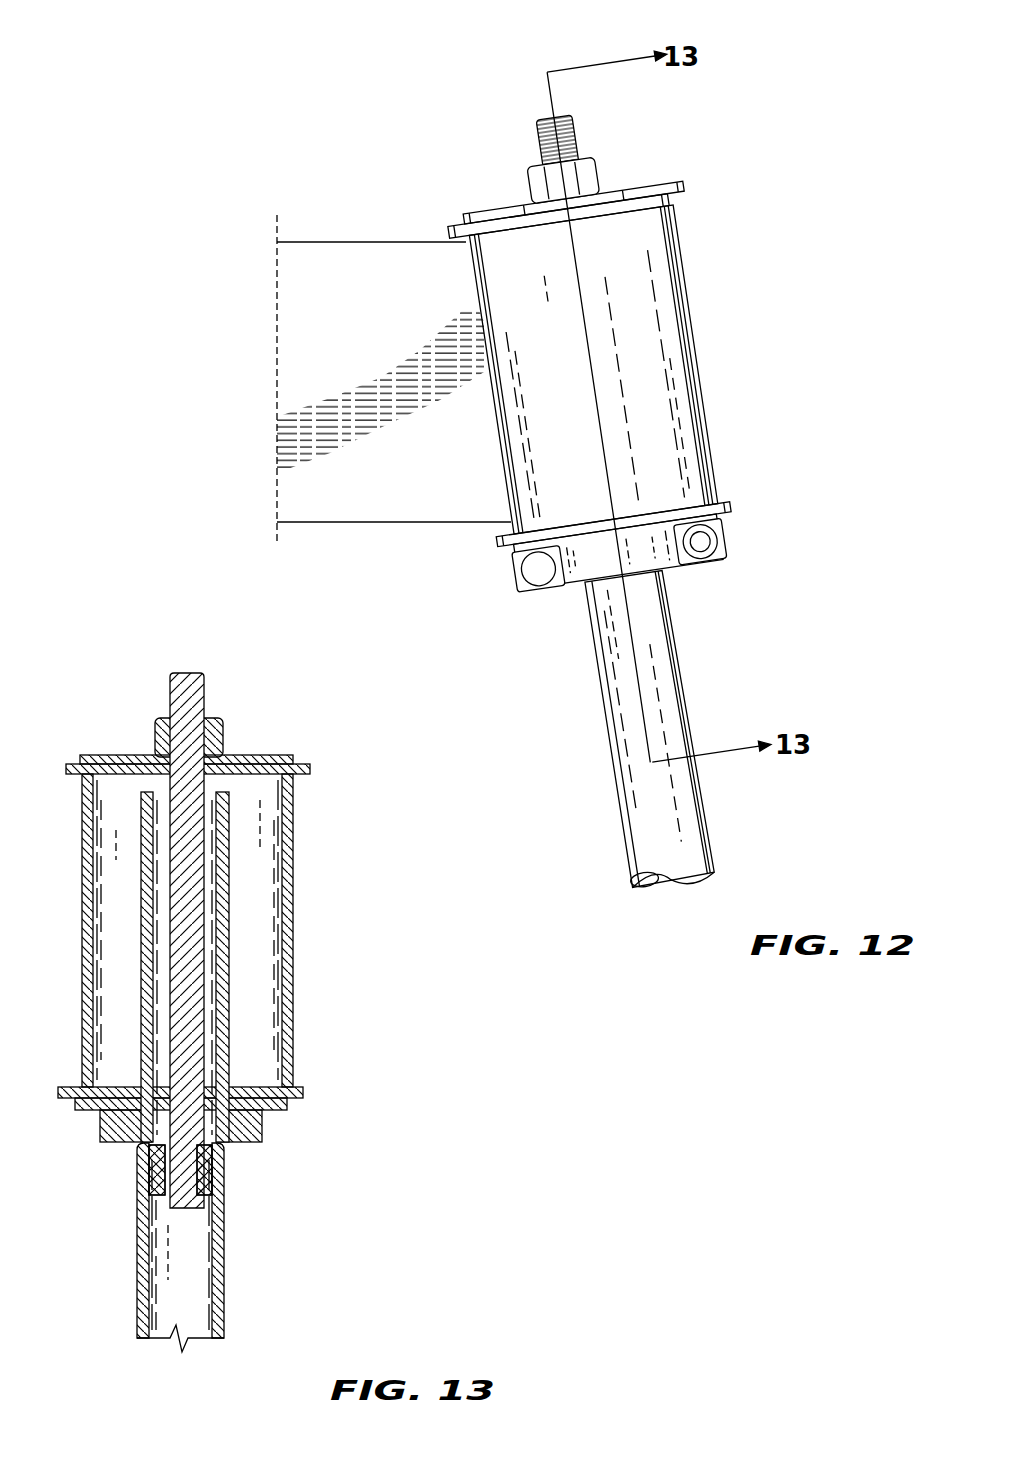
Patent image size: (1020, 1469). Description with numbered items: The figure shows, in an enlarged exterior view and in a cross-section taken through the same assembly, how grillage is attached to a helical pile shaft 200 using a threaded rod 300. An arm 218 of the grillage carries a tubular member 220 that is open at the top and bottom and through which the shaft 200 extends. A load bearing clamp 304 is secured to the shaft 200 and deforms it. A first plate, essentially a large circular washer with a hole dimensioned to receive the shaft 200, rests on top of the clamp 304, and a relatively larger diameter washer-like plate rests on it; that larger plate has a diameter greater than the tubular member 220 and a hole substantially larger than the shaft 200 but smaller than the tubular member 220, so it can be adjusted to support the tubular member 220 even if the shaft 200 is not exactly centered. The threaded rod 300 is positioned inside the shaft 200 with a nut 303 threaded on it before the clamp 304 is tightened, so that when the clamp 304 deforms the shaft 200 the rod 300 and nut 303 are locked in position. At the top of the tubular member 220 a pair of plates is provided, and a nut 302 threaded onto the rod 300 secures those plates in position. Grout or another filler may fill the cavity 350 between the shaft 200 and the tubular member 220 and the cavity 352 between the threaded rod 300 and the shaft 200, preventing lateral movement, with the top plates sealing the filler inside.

In FIG. 13, the shaft 200 is at (220, 1268).
In FIG. 12, the arm 218 is at (387, 474).
In FIG. 13, the tubular member 220 is at (293, 895).
In FIG. 13, the threaded rod 300 is at (197, 700).
In FIG. 13, the nut 302 is at (157, 732).
In FIG. 13, the nut 303 is at (224, 1185).
In FIG. 13, the clamp 304 is at (258, 1132).
In FIG. 13, the cavity 350 is at (267, 932).
In FIG. 13, the cavity 352 is at (208, 1017).